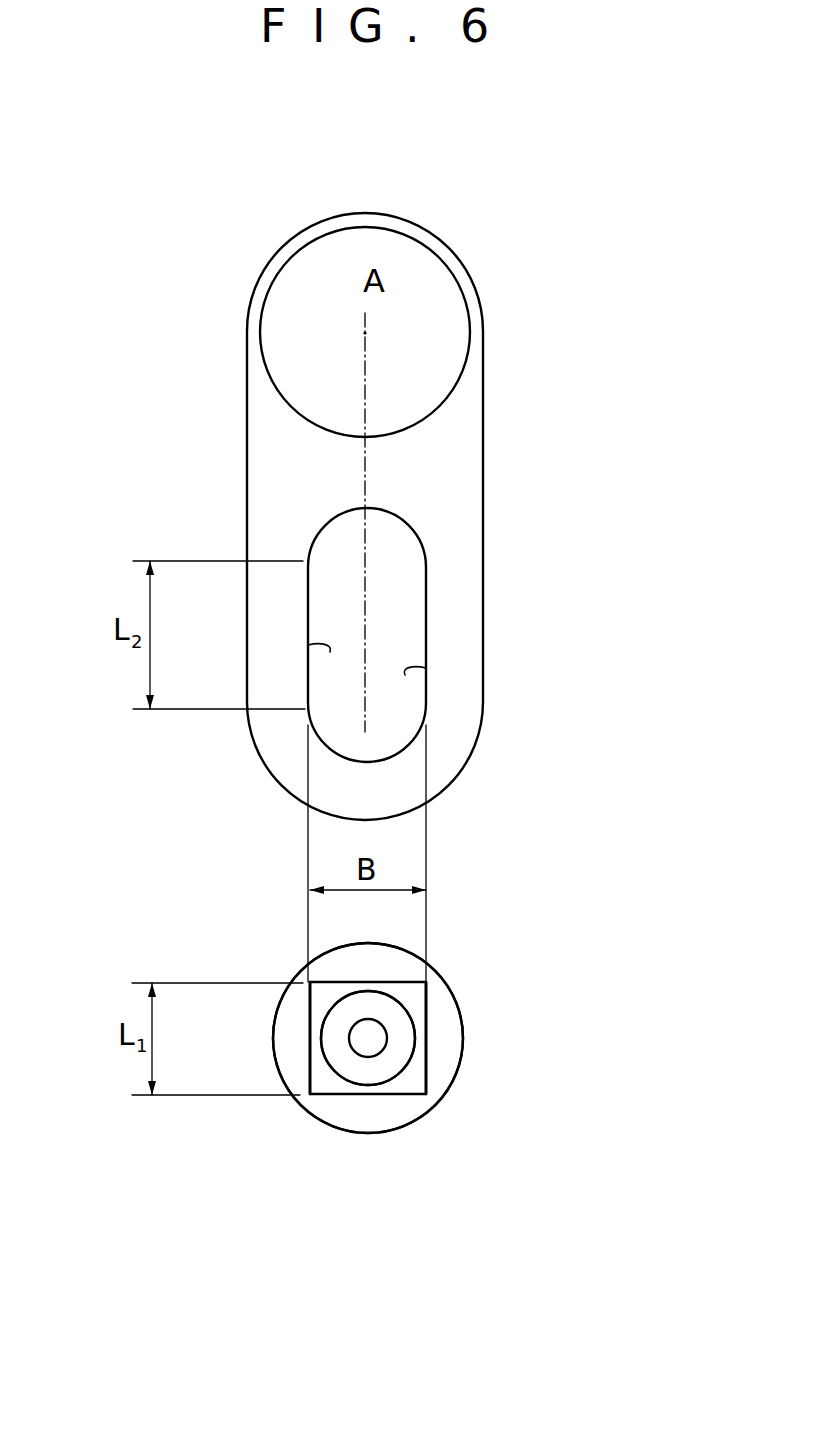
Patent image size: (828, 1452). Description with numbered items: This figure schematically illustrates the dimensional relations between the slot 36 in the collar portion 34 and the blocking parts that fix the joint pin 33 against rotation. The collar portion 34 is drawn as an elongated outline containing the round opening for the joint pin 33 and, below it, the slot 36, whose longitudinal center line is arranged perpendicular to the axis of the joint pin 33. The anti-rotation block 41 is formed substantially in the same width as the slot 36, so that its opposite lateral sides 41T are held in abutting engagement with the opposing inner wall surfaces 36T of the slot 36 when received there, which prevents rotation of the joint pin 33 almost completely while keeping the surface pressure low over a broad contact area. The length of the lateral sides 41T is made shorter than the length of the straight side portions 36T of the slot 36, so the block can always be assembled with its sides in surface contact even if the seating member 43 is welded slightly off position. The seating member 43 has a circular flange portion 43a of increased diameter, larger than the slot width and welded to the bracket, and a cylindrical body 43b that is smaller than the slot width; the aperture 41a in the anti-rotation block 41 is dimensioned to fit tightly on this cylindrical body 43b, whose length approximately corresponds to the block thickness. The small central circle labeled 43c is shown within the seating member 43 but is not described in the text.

The joint pin 33 is at (275, 313).
The collar portion 34 is at (472, 477).
The slot 36 is at (412, 632).
The inner wall surfaces of the slot 36T is at (330, 652).
The anti-rotation block 41 is at (433, 1081).
The lateral sides of the anti-rotation block 41T is at (310, 1022).
The aperture 41a is at (340, 1049).
The seating member 43 is at (476, 1010).
The flange portion 43a is at (445, 997).
The cylindrical body 43b is at (379, 1073).
The central shaft 43c is at (381, 1023).